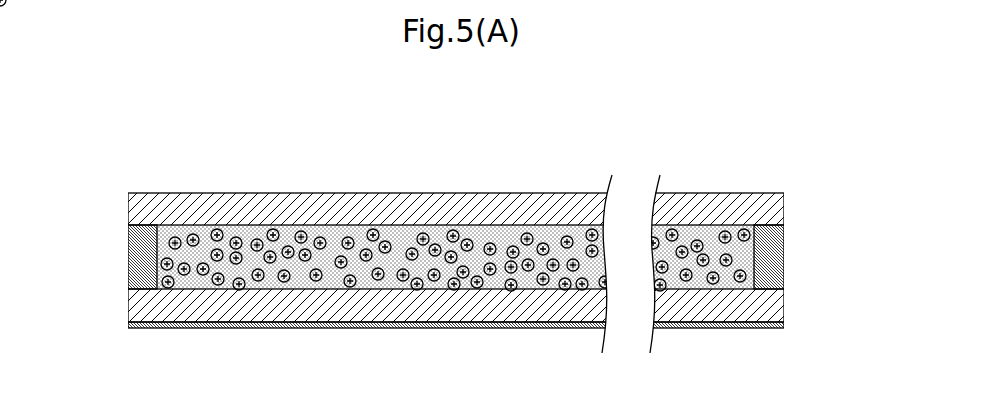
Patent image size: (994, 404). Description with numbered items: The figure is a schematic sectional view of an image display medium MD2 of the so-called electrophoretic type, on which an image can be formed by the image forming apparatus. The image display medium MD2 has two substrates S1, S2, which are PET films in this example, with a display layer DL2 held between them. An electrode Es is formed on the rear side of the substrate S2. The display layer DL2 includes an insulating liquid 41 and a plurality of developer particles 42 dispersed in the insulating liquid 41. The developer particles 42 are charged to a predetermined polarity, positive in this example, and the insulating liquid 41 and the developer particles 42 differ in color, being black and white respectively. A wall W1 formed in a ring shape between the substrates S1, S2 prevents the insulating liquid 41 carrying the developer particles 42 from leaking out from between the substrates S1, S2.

The image display medium MD2 is at (188, 170).
The substrate S1 is at (456, 209).
The substrate S2 is at (456, 305).
The electrode Es is at (456, 325).
The wall W1 is at (142, 257).
The display layer DL2 is at (769, 257).
The insulating liquid 41 is at (455, 257).
The developer particles 42 is at (452, 232).